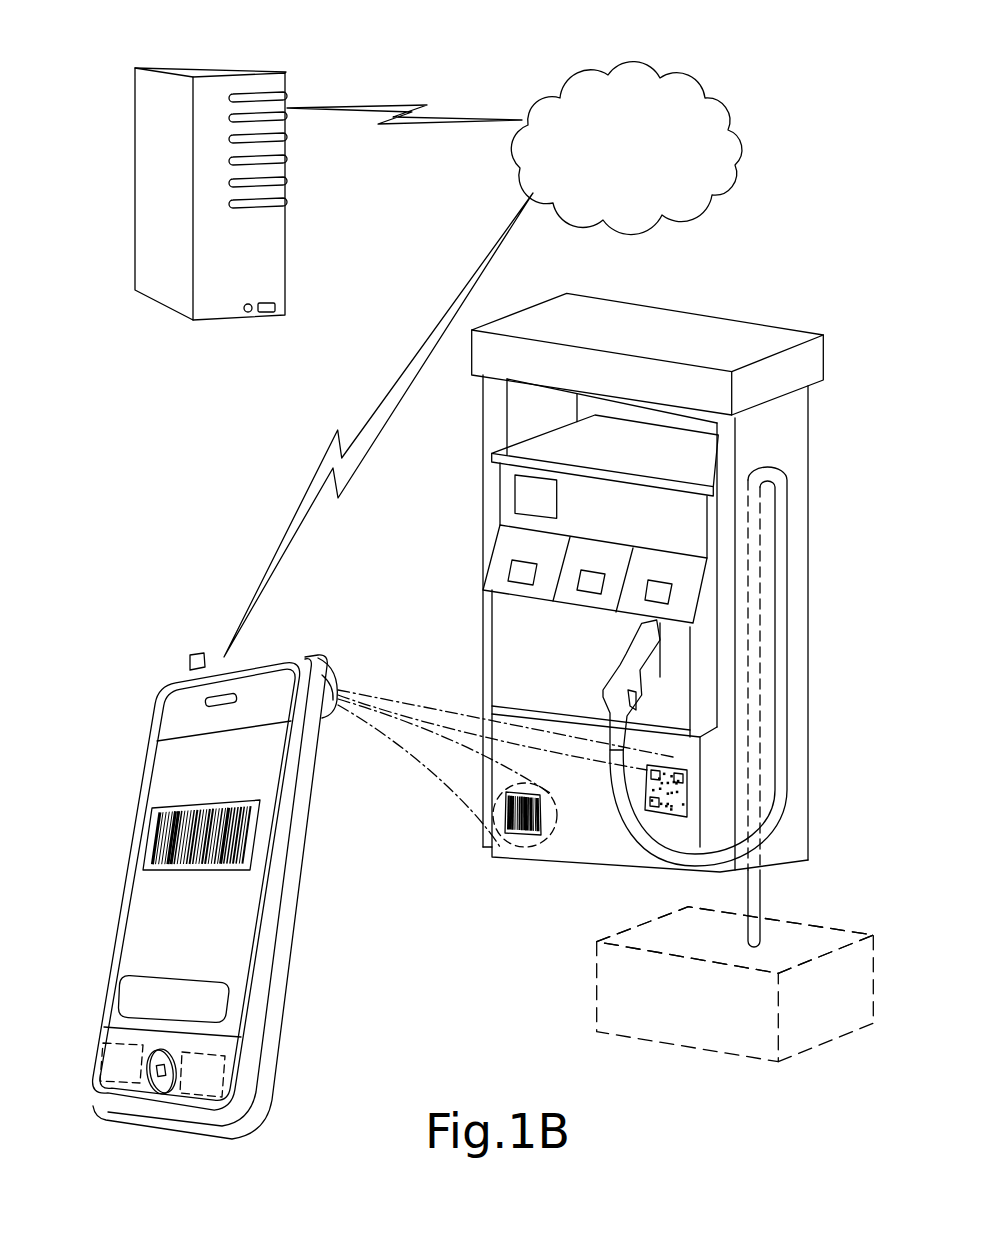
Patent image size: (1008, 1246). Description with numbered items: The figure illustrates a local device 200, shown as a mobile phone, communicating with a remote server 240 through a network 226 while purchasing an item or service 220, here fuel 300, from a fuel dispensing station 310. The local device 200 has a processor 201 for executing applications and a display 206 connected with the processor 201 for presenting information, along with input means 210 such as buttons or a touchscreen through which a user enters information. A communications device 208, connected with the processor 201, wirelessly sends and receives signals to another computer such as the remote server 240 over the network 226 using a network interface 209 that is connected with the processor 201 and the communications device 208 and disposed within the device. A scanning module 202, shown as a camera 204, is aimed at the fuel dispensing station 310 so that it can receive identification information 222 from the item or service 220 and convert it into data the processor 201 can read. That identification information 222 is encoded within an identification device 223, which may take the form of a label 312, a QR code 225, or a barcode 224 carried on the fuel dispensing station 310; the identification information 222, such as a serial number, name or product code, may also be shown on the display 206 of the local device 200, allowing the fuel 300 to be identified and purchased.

The remote server 240 is at (200, 67).
The network 226 is at (650, 193).
The fuel dispensing station 310 is at (810, 580).
The label 312 is at (557, 497).
The identification device 223 is at (532, 477).
The identification information 222 is at (532, 500).
The barcode 224 is at (520, 847).
The QR code 225 is at (663, 810).
The item or service 220 is at (623, 990).
The fuel 300 is at (666, 942).
The local device 200 is at (150, 765).
The display 206 is at (153, 795).
The communications device 208 is at (185, 660).
The input means 210 is at (230, 1000).
The network interface 209 is at (122, 1085).
The processor 201 is at (225, 1073).
The scanning module 202 is at (336, 690).
The camera 204 is at (505, 746).